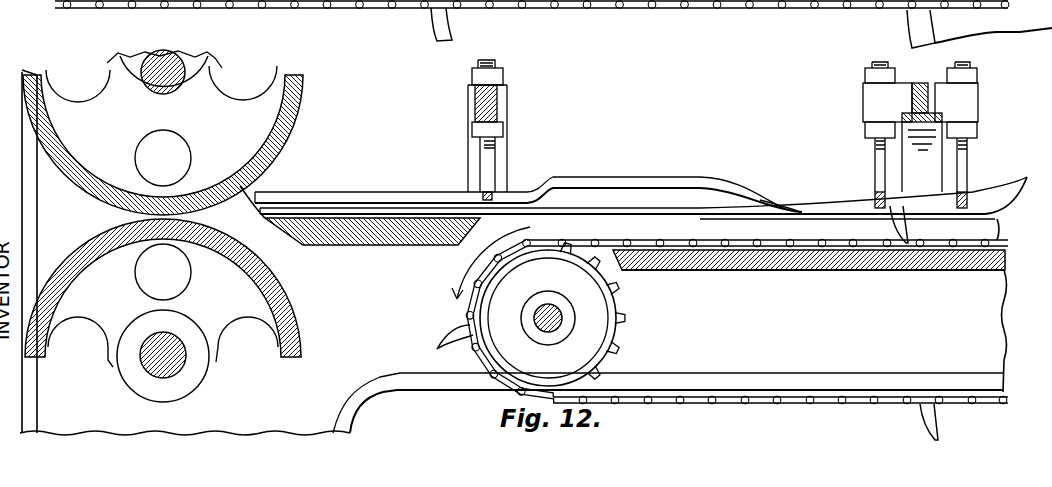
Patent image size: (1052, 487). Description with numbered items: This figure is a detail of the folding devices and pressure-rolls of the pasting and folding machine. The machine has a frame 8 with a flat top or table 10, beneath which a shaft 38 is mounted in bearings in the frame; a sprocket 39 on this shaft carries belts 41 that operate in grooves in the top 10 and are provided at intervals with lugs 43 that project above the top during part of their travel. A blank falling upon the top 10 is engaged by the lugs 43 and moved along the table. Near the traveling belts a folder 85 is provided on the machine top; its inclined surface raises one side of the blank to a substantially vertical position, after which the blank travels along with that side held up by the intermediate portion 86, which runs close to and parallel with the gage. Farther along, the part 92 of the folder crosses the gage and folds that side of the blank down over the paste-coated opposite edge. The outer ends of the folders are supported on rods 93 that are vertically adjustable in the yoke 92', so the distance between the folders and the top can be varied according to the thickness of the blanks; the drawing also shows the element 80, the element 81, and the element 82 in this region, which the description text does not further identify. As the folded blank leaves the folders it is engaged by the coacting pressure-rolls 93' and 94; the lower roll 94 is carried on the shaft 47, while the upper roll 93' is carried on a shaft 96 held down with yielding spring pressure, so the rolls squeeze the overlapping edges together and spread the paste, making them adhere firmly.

The frame 8 is at (670, 326).
The top 10 is at (397, 220).
The shaft 38 is at (562, 318).
The sprocket 39 is at (531, 306).
The belts 41 is at (343, 13).
The lugs 43 is at (451, 33).
The shaft 47 is at (172, 370).
The plate 80 is at (838, 201).
The bolt 81 is at (880, 163).
The clamp block 82 is at (920, 137).
The folder 85 is at (800, 212).
The intermediate portion 86 is at (628, 181).
The part of the folder 92 is at (477, 179).
The yoke 92' is at (508, 103).
The rods 93 is at (503, 130).
The upper pressure-roll 93' is at (183, 133).
The lower pressure-roll 94 is at (290, 312).
The shaft 96 is at (182, 62).